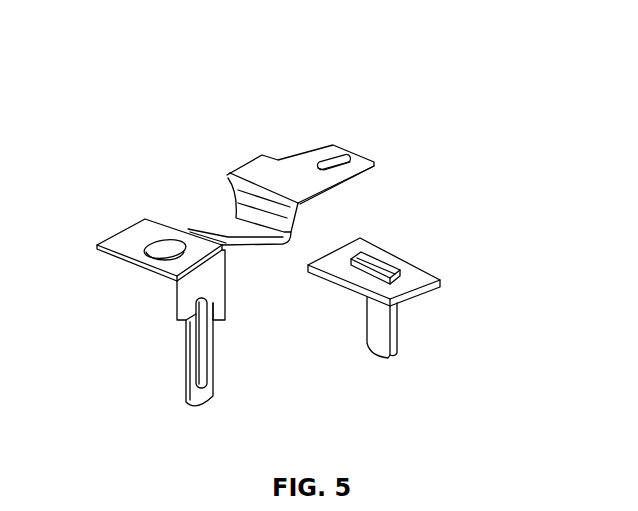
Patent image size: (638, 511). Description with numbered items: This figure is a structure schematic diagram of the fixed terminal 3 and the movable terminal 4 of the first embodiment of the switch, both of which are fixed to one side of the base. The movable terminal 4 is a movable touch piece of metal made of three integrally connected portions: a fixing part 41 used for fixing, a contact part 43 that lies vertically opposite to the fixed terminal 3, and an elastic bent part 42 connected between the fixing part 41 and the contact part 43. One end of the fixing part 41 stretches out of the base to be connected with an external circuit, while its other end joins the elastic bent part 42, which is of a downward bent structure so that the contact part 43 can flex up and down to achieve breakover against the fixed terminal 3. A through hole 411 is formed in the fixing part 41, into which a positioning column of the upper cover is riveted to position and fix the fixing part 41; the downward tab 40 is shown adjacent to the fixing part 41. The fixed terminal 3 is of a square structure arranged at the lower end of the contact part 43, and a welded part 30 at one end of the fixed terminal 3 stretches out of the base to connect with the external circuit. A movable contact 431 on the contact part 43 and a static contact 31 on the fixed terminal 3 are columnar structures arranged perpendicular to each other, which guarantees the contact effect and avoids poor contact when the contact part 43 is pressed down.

The fixed terminal 3 is at (433, 267).
The welded part 30 is at (390, 327).
The static contact 31 is at (378, 262).
The movable terminal 4 is at (228, 290).
The bracket tongue 40 is at (183, 357).
The fixing part 41 is at (139, 232).
The through hole 411 is at (166, 254).
The elastic bent part 42 is at (235, 196).
The contact part 43 is at (307, 183).
The movable contact 431 is at (338, 162).